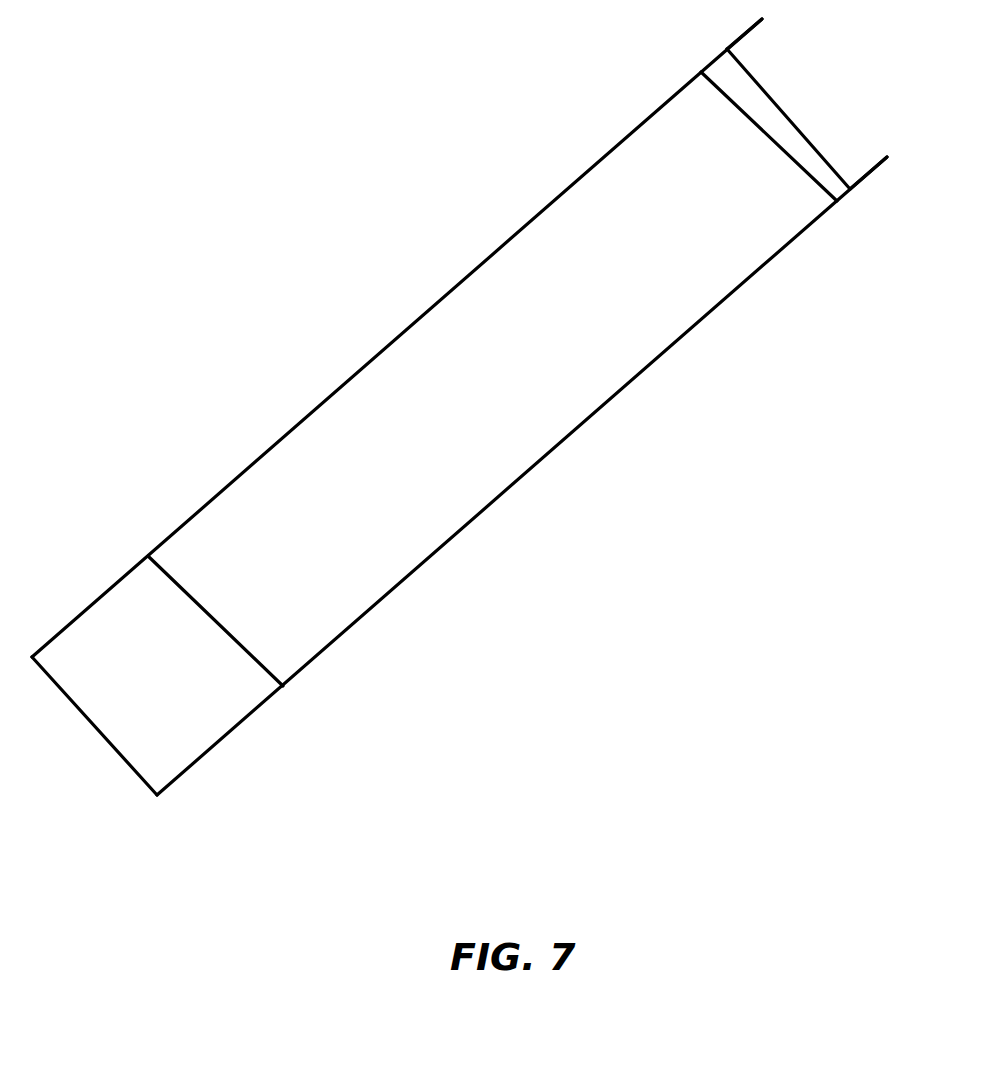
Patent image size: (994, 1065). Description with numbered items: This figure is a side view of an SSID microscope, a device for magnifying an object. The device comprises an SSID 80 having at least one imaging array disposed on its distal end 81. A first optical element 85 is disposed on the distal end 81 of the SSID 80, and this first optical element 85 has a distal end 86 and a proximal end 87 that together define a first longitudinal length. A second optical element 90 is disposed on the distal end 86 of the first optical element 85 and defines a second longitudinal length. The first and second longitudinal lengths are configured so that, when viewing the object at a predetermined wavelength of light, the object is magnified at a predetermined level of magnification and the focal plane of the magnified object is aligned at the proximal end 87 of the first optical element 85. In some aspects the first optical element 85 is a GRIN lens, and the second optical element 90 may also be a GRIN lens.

The SSID 80 is at (838, 188).
The distal end of the SSID 81 is at (814, 176).
The first optical element 85 is at (503, 462).
The distal end of the first optical element 86 is at (265, 681).
The proximal end of the first optical element 87 is at (725, 80).
The second optical element 90 is at (162, 758).